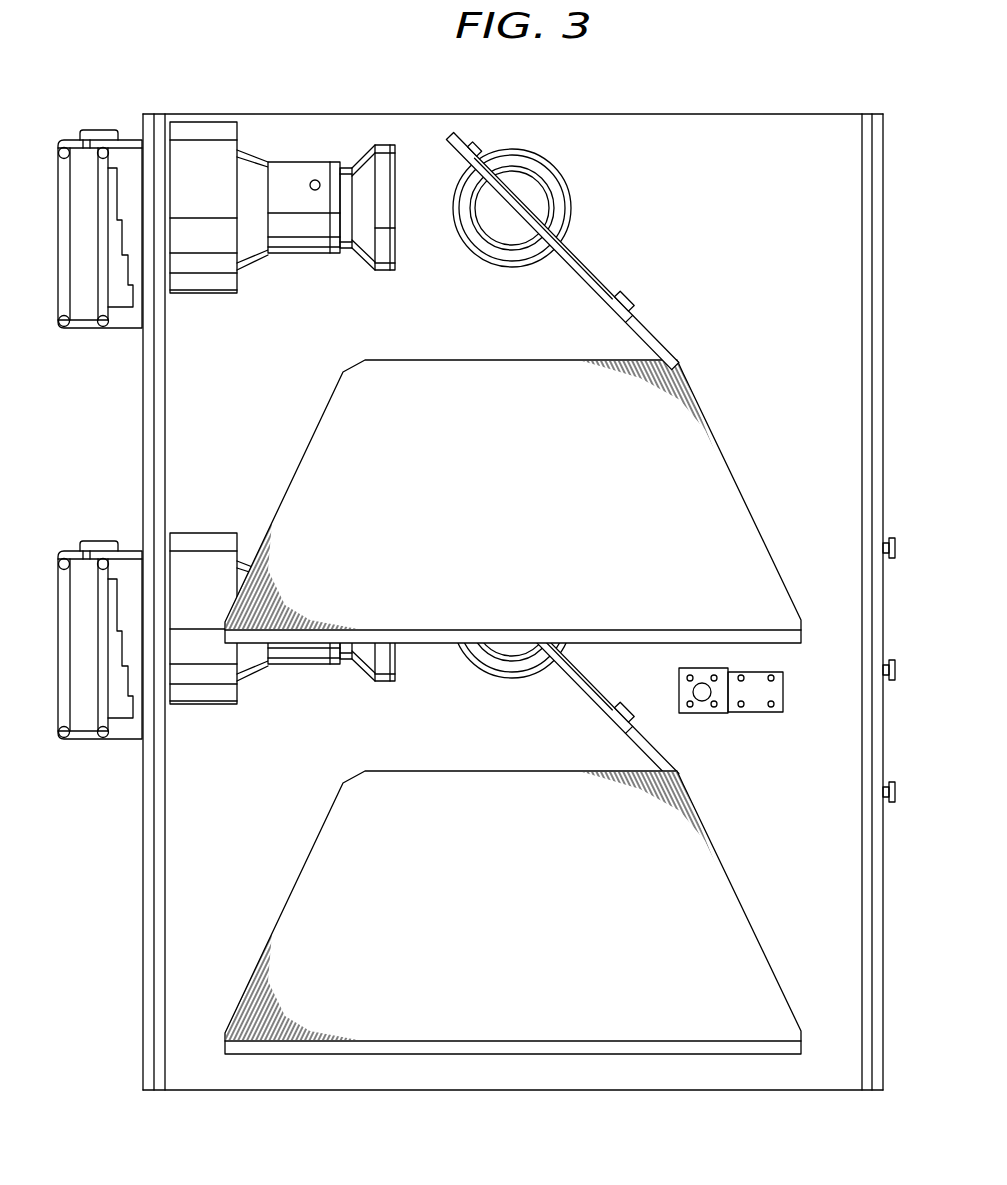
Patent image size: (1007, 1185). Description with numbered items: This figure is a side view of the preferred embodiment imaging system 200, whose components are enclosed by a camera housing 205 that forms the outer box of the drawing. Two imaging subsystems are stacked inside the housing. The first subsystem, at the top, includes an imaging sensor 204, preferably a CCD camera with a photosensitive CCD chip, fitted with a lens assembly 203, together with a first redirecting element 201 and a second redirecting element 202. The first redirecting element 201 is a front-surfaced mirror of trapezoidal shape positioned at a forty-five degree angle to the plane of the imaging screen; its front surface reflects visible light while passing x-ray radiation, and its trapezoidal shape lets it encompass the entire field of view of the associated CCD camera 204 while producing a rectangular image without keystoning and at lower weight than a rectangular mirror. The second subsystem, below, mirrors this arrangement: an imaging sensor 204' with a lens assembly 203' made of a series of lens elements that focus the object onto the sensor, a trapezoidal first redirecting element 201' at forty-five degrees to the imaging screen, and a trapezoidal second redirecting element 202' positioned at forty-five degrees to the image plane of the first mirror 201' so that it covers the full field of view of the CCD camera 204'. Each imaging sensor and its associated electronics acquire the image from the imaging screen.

The imaging system 200 is at (720, 55).
The first redirecting element 201 is at (513, 501).
The first redirecting element 201' is at (513, 912).
The second redirecting element 202 is at (565, 248).
The second redirecting element 202' is at (607, 659).
The lens assembly 203 is at (331, 230).
The lens assembly 203' is at (331, 641).
The imaging sensor 204 is at (228, 218).
The imaging sensor 204' is at (231, 631).
The camera housing 205 is at (883, 135).